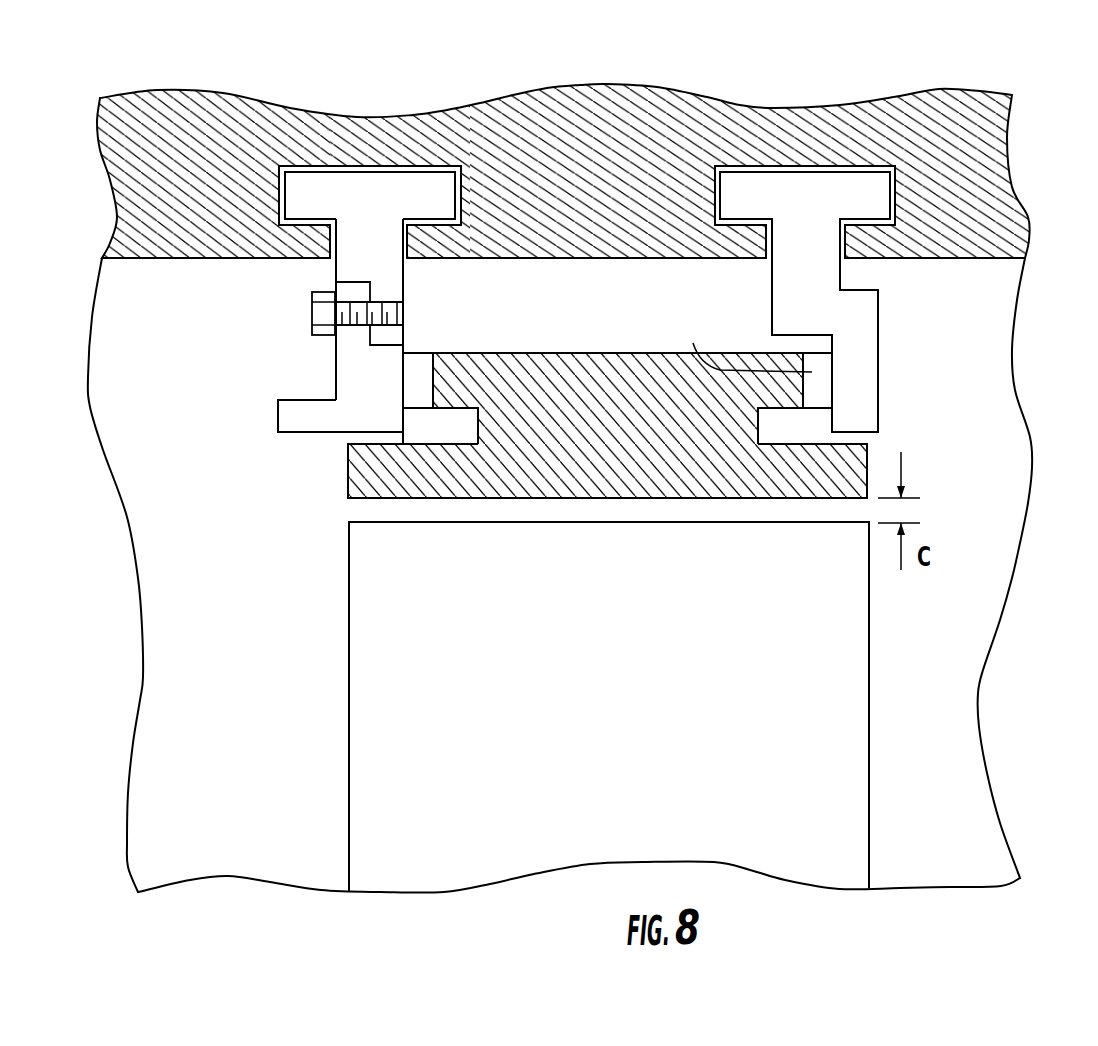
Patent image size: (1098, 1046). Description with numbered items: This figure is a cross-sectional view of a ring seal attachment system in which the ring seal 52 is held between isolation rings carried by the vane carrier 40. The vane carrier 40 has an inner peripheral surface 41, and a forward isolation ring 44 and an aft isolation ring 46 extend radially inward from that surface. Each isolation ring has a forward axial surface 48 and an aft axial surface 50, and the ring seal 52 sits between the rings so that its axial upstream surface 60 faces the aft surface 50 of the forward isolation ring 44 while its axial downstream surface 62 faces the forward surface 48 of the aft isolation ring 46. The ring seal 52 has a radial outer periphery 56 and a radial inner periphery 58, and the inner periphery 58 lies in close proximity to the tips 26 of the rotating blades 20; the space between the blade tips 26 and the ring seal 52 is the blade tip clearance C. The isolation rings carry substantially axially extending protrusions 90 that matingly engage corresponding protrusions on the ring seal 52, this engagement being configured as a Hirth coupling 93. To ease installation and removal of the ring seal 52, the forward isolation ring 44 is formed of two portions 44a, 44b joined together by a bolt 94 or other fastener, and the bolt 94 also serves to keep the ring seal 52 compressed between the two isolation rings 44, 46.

The rotating blades 20 is at (611, 681).
The blade tips 26 is at (385, 515).
The vane carrier 40 is at (977, 123).
The inner peripheral surface 41 is at (967, 259).
The forward isolation ring 44 is at (328, 308).
The portion of forward isolation ring 44a is at (393, 384).
The portion of forward isolation ring 44b is at (391, 217).
The aft isolation ring 46 is at (858, 350).
The forward axial surface 48 is at (333, 355).
The aft axial surface 50 is at (405, 283).
The ring seal 52 is at (620, 416).
The radial outer periphery 56 is at (597, 352).
The radial inner periphery 58 is at (360, 502).
The axial upstream surface 60 is at (322, 461).
The axial downstream surface 62 is at (884, 440).
The protrusions 90 is at (412, 358).
The Hirth coupling 93 is at (454, 321).
The bolt 94 is at (320, 298).